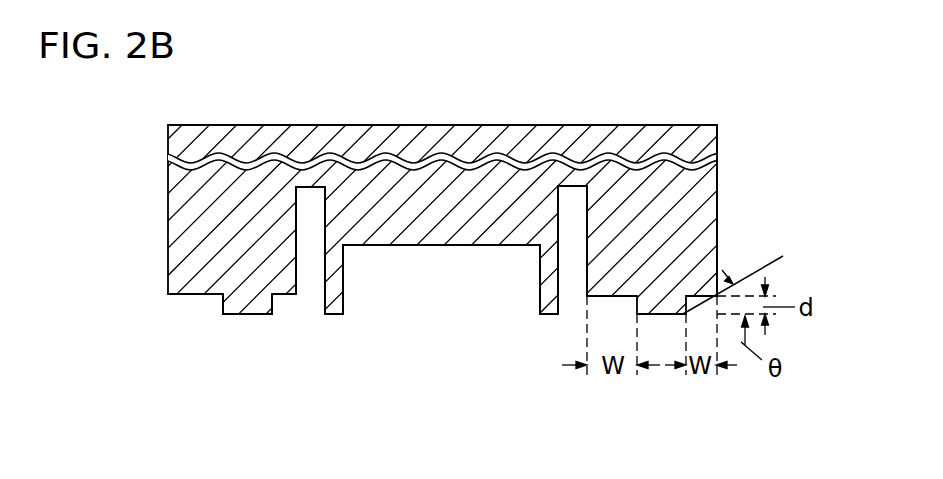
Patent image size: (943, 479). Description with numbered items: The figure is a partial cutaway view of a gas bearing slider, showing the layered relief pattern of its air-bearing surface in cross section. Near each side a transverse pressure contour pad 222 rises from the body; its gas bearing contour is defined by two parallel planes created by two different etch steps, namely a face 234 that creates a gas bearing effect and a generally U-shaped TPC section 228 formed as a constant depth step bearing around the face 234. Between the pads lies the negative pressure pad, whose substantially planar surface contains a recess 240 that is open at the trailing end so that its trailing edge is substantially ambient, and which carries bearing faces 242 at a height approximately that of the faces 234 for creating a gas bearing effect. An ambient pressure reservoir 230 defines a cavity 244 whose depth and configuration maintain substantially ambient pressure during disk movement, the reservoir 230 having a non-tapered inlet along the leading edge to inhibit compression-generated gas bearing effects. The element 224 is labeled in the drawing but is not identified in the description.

The transverse pressure contour (TPC) pad 222 is at (173, 326).
The upper layer 224 is at (717, 193).
The U-shaped TPC section 228 is at (192, 295).
The ambient pressure reservoir 230 is at (308, 302).
The face 234 is at (247, 315).
The recess 240 is at (468, 245).
The bearing face 242 is at (335, 313).
The cavity 244 is at (313, 255).